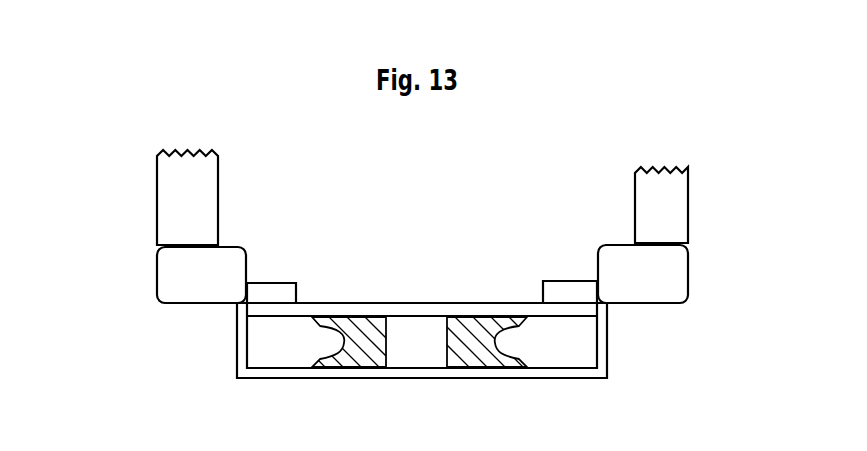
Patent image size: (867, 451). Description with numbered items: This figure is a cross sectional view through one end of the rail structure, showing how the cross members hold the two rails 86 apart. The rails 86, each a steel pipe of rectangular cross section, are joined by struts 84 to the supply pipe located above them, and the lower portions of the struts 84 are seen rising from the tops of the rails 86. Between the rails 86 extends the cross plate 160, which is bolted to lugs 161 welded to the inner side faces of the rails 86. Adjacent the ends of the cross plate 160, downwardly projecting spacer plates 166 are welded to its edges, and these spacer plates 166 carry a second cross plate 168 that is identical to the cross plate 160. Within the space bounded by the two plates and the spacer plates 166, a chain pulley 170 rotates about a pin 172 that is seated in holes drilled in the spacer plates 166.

The struts 84 is at (162, 188).
The rails 86 is at (173, 276).
The cross plate 160 is at (492, 305).
The lugs 161 is at (268, 284).
The spacer plates 166 is at (240, 342).
The second cross plate 168 is at (337, 370).
The chain pulley 170 is at (487, 350).
The pin 172 is at (406, 323).